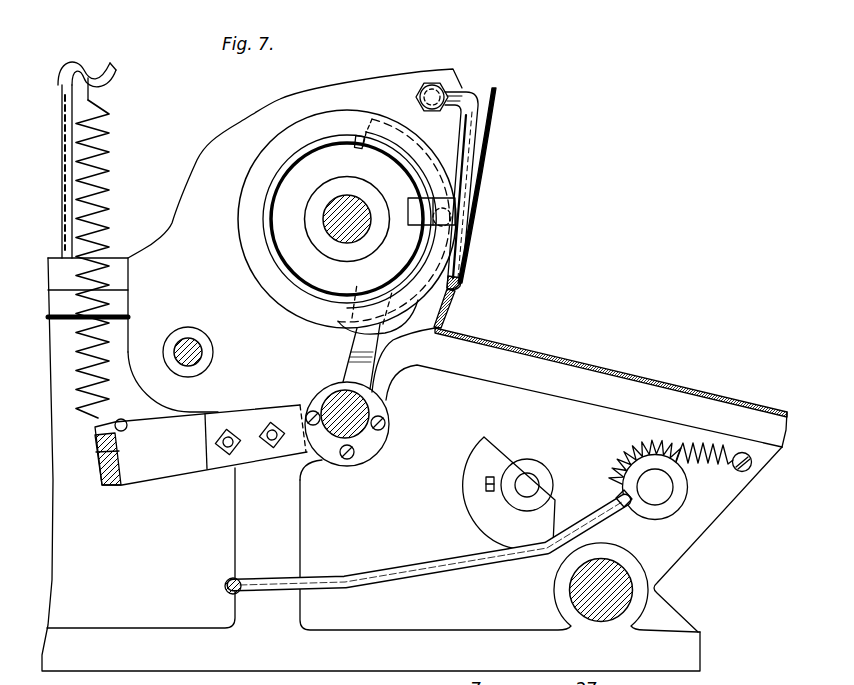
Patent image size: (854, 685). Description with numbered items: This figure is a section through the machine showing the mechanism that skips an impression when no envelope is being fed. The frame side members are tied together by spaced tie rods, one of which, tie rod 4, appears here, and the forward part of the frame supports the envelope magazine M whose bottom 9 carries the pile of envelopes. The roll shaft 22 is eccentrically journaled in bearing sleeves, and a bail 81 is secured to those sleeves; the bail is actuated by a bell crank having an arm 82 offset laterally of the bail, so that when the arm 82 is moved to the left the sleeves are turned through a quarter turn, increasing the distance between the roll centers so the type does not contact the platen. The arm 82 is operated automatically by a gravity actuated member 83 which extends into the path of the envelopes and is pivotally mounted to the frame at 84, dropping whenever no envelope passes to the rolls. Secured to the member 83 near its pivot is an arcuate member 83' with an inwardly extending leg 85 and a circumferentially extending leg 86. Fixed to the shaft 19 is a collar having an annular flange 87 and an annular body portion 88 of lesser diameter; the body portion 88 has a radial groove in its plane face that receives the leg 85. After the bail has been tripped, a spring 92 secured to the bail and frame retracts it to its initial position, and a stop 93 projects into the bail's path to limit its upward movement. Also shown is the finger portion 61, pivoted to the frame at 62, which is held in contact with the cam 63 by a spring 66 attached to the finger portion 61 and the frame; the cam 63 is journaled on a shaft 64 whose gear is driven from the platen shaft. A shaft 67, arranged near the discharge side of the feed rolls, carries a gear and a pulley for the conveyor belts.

The tie rod 4 is at (604, 578).
The bottom 9 is at (558, 361).
The shaft 19 is at (337, 224).
The shaft 22 is at (360, 413).
The finger portion 61 is at (407, 572).
The pivot 62 is at (664, 490).
The cam 63 is at (488, 512).
The shaft 64 is at (530, 483).
The spring 66 is at (644, 446).
The shaft 67 is at (192, 343).
The bail 81 is at (162, 460).
The arm 82 is at (362, 346).
The gravity actuated member 83 is at (484, 191).
The arcuate member 83' is at (481, 276).
The pivot 84 is at (464, 90).
The inwardly extending leg 85 is at (413, 200).
The circumferentially extending leg 86 is at (444, 308).
The annular flange 87 is at (248, 193).
The annular body portion 88 is at (280, 221).
The spring 92 is at (110, 168).
The stop 93 is at (127, 425).
The envelope magazine M is at (492, 105).